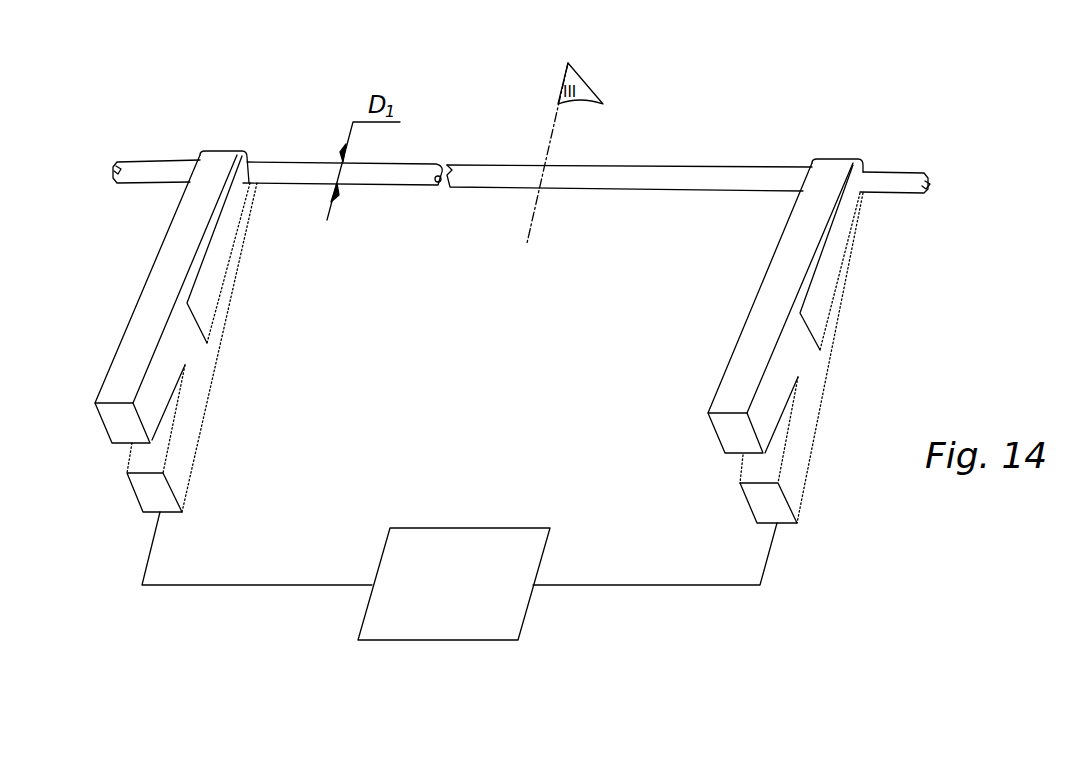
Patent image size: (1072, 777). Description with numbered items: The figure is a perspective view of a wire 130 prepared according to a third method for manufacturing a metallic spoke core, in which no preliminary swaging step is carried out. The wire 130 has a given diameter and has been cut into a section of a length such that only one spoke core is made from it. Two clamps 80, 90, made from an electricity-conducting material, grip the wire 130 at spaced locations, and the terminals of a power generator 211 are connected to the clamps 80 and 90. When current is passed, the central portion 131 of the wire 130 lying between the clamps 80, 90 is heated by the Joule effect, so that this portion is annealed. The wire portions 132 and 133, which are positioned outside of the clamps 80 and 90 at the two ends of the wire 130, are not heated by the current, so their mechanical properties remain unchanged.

The clamp 80 is at (190, 438).
The clamp 90 is at (733, 392).
The wire 130 is at (527, 170).
The central portion 131 is at (597, 182).
The wire portion 132 is at (138, 170).
The wire portion 133 is at (902, 177).
The power generator 211 is at (445, 528).